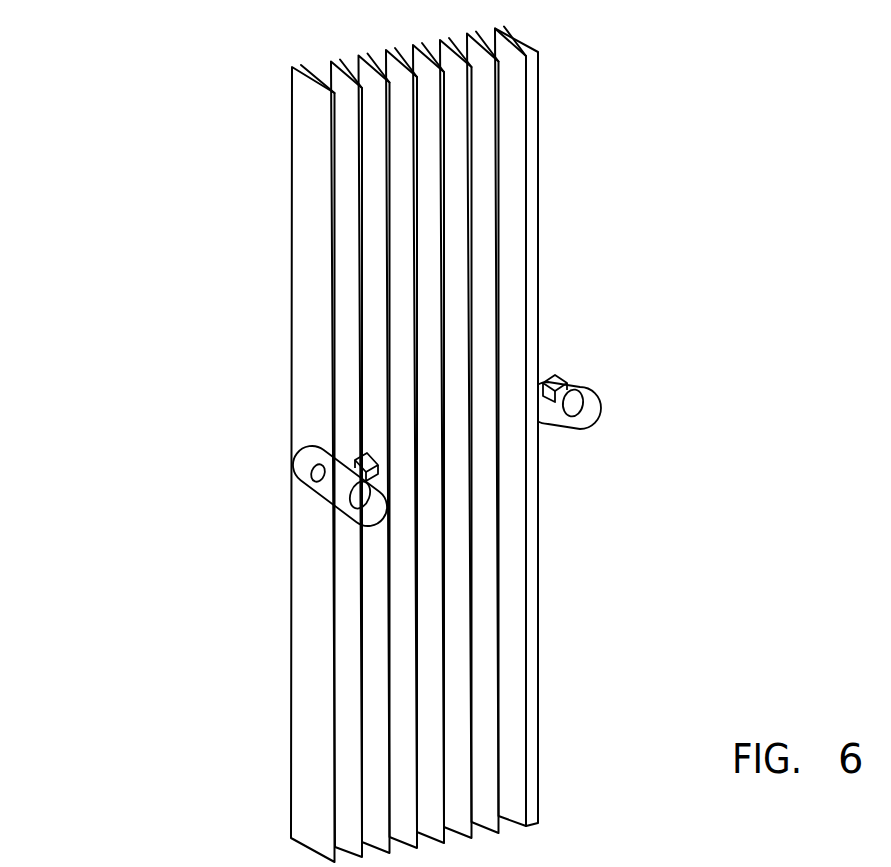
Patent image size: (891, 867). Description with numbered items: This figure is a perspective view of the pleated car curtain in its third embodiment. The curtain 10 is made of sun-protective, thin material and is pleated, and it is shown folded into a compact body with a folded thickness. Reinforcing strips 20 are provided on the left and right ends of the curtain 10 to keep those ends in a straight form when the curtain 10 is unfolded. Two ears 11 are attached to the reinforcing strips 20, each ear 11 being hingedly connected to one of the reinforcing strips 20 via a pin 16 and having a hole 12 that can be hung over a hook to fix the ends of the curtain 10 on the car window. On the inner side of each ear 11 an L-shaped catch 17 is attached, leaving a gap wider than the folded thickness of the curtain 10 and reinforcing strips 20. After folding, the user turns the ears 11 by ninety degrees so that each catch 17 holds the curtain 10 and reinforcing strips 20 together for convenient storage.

The curtain 10 is at (388, 445).
The reinforcing strips 20 is at (318, 165).
The ears 11 is at (300, 461).
The hole 12 is at (357, 502).
The pin 16 is at (316, 476).
The L-shaped catch 17 is at (355, 458).